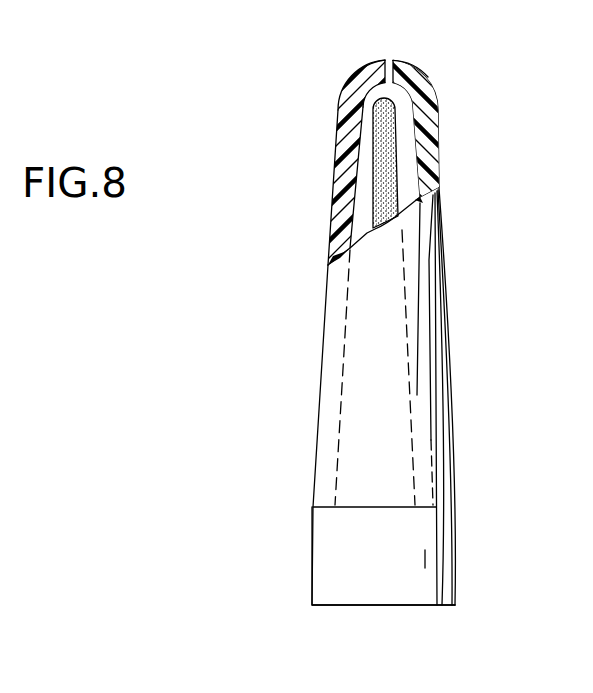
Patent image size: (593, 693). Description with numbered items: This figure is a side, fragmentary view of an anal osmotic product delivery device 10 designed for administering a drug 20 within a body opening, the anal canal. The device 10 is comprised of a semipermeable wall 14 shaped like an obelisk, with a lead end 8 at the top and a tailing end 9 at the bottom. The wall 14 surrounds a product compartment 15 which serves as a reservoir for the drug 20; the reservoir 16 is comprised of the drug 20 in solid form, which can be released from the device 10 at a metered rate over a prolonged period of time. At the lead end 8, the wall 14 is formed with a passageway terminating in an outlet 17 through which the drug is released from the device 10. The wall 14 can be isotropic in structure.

The lead end 8 is at (395, 62).
The tailing end 9 is at (423, 541).
The product delivery device 10 is at (305, 192).
The semipermeable wall 14 is at (430, 169).
The product compartment 15 is at (408, 141).
The reservoir 16 is at (356, 66).
The outlet 17 is at (387, 58).
The drug 20 is at (374, 122).